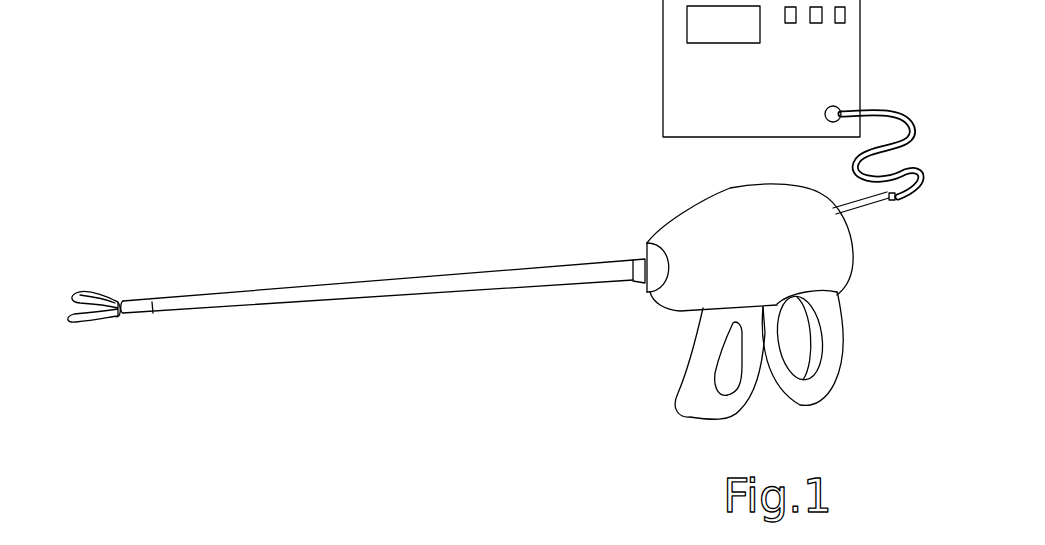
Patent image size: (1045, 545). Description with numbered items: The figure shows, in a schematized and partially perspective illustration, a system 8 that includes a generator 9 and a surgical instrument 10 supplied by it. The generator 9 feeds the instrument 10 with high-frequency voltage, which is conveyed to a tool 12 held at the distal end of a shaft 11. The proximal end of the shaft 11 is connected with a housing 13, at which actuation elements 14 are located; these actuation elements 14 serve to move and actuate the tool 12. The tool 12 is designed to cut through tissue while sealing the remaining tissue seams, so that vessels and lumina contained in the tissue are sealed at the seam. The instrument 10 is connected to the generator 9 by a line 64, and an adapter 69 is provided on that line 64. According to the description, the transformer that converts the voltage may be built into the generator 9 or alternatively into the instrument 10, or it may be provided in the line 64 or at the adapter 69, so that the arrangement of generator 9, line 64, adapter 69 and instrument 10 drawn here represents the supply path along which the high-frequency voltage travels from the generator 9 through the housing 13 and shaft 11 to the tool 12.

The system 8 is at (531, 3).
The generator 9 is at (645, 28).
The surgical instrument 10 is at (646, 191).
The shaft 11 is at (364, 287).
The tool 12 is at (161, 246).
The housing 13 is at (780, 268).
The actuation elements 14 is at (638, 428).
The line 64 is at (888, 112).
The adapter 69 is at (838, 107).